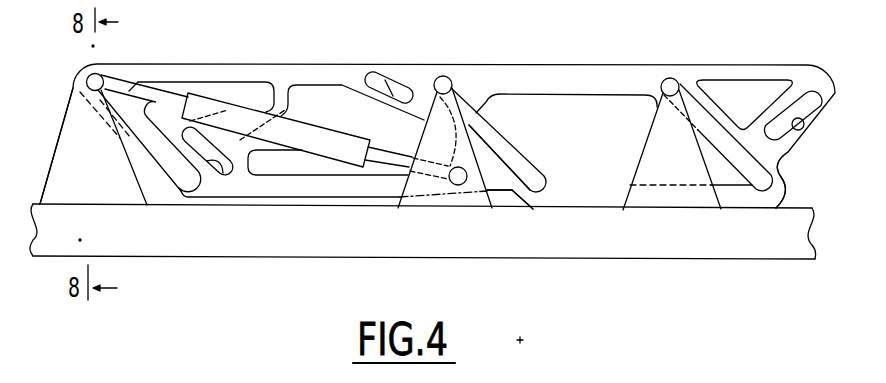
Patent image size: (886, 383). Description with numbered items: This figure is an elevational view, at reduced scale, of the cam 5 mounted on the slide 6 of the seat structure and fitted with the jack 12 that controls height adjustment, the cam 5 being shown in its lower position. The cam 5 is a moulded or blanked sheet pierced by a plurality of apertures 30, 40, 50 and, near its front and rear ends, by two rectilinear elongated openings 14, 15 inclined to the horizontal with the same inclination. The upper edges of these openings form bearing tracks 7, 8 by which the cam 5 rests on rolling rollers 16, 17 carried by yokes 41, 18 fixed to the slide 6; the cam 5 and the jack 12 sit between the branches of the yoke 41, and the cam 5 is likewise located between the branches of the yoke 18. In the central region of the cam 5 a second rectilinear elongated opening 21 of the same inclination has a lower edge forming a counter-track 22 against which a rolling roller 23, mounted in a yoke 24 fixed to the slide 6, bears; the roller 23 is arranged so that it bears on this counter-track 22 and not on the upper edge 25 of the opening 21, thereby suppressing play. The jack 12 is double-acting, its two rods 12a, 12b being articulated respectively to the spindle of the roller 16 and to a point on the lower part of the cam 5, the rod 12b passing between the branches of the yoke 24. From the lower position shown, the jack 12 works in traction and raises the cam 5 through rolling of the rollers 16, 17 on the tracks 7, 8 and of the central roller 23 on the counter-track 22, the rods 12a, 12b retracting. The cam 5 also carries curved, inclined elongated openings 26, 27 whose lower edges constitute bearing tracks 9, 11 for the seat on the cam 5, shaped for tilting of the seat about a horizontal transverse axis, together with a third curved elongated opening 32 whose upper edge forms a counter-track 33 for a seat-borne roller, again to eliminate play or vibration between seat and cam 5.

The cam 5 is at (615, 63).
The slide 6 is at (773, 243).
The bearing track 7 is at (143, 157).
The bearing track 8 is at (712, 141).
The bearing track 9 is at (220, 175).
The bearing track 11 is at (803, 128).
The jack 12 is at (300, 150).
The rod 12a is at (170, 98).
The rod 12b is at (384, 160).
The rectilinear elongated opening 14 is at (180, 173).
The rectilinear elongated opening 15 is at (787, 172).
The rolling roller 16 is at (101, 76).
The rolling roller 17 is at (670, 78).
The yoke 18 is at (645, 196).
The second rectilinear elongated opening 21 is at (510, 157).
The counter-track 22 is at (485, 142).
The rolling roller 23 is at (446, 76).
The yoke 24 is at (420, 203).
The upper edge 25 is at (538, 175).
The inclined elongated opening 26 is at (232, 172).
The inclined elongated opening 27 is at (802, 97).
The aperture 30 is at (586, 178).
The third elongated opening 32 is at (374, 76).
The counter-track 33 is at (386, 97).
The aperture 40 is at (733, 92).
The yoke 41 is at (92, 184).
The aperture 50 is at (252, 90).